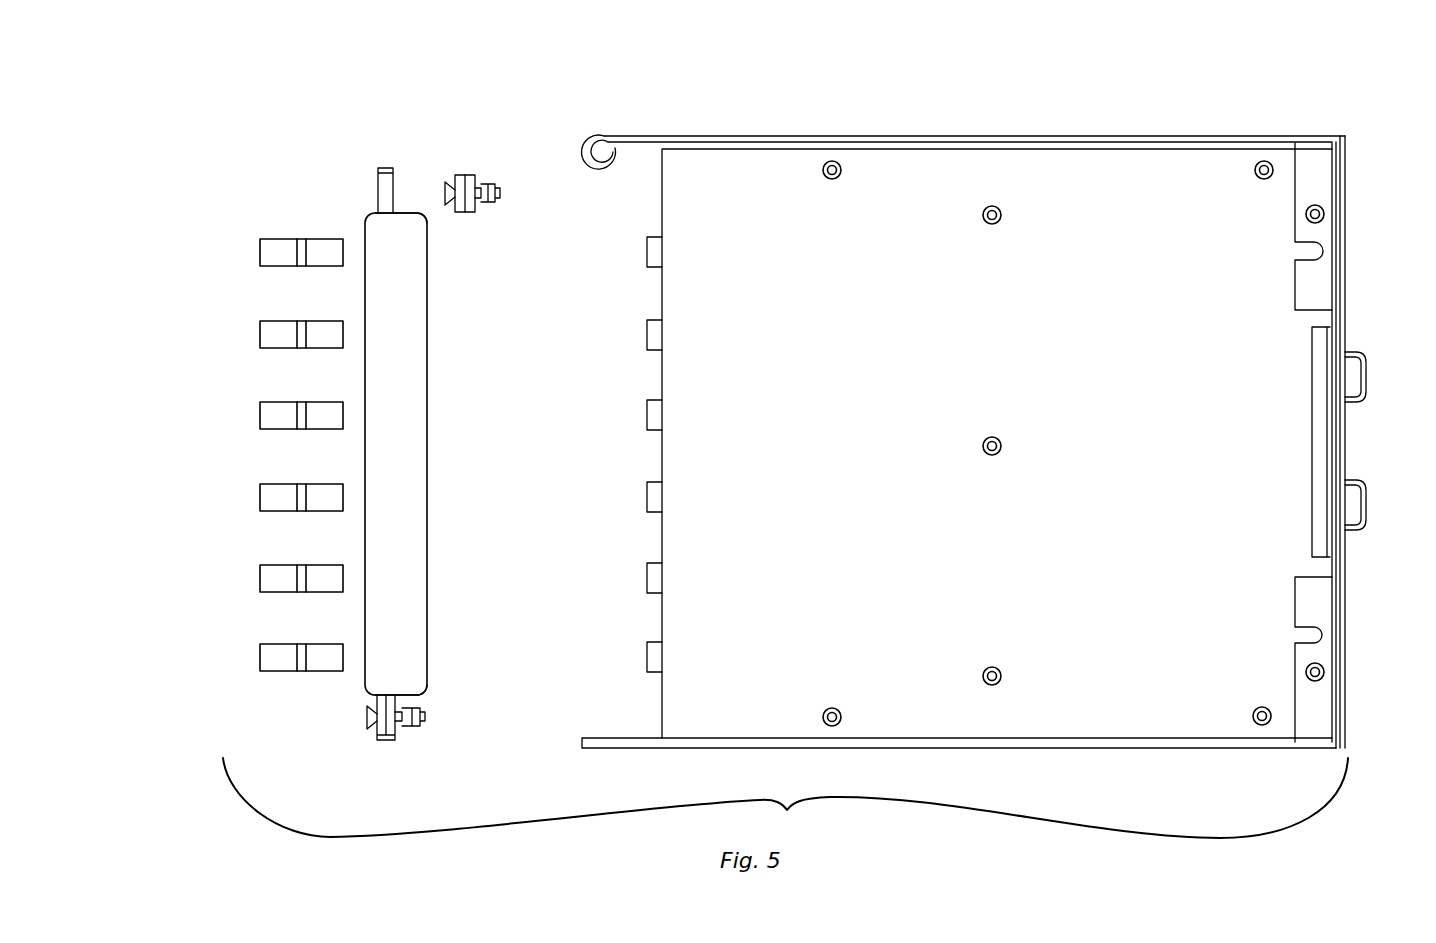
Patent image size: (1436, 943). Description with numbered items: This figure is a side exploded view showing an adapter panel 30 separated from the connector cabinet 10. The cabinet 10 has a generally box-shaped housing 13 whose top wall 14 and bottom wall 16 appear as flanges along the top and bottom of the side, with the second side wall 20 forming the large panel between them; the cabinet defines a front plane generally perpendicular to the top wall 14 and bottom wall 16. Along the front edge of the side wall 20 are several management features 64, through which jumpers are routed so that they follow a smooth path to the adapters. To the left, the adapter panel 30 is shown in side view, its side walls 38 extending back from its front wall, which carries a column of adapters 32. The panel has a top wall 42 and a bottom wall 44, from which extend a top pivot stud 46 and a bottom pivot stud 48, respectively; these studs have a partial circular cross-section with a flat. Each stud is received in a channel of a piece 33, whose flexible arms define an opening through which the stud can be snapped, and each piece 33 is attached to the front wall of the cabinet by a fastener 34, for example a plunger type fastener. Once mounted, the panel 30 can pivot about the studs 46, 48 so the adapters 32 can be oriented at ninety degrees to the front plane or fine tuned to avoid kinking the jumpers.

The connector cabinet 10 is at (1040, 98).
The housing 13 is at (1325, 566).
The top wall 14 is at (892, 143).
The bottom wall 16 is at (1160, 746).
The second side wall 20 is at (700, 680).
The adapter panel 30 is at (410, 210).
The adapters 32 is at (260, 252).
The piece 33 is at (470, 175).
The fastener 34 is at (447, 188).
The side walls 38 is at (418, 548).
The top wall 42 is at (422, 210).
The bottom wall 44 is at (424, 702).
The top pivot stud 46 is at (378, 178).
The bottom pivot stud 48 is at (387, 742).
The management feature 64 is at (655, 330).